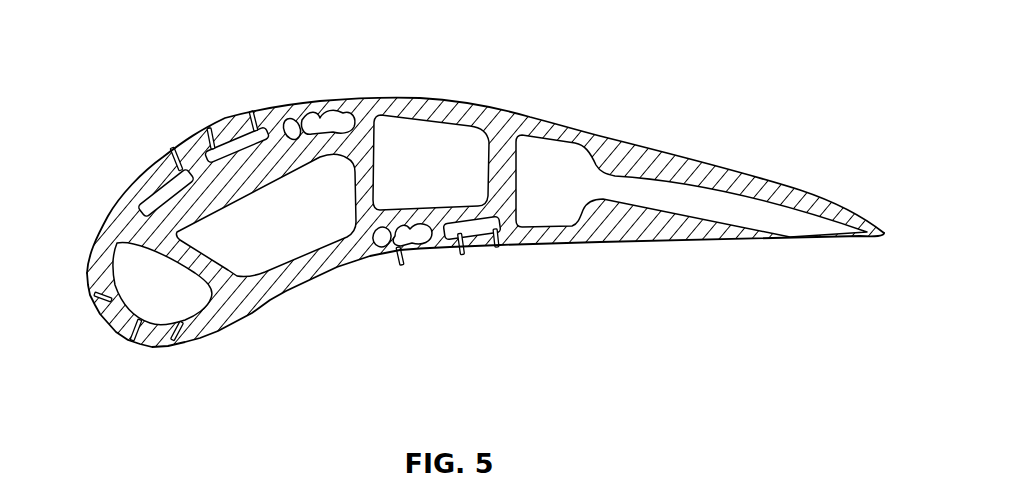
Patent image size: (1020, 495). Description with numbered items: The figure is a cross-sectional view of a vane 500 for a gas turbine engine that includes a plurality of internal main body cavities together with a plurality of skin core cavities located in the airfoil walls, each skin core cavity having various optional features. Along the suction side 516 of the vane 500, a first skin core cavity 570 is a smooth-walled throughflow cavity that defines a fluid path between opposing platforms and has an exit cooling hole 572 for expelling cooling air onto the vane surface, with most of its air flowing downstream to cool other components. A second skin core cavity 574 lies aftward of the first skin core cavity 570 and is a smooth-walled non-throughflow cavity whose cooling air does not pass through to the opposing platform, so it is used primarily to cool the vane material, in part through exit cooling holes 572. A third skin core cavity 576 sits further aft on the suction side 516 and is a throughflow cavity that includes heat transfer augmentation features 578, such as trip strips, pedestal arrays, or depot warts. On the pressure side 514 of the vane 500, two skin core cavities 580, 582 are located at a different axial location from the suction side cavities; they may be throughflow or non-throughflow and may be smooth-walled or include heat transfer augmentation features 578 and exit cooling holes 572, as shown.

The vane 500 is at (472, 186).
The pressure side 514 is at (306, 284).
The suction side 516 is at (456, 101).
The first skin core cavity 570 is at (156, 196).
The exit cooling hole 572 is at (248, 107).
The second skin core cavity 574 is at (240, 157).
The third skin core cavity 576 is at (322, 115).
The heat transfer augmentation features 578 is at (300, 137).
The skin core cavity 580 is at (402, 245).
The skin core cavity 582 is at (522, 239).